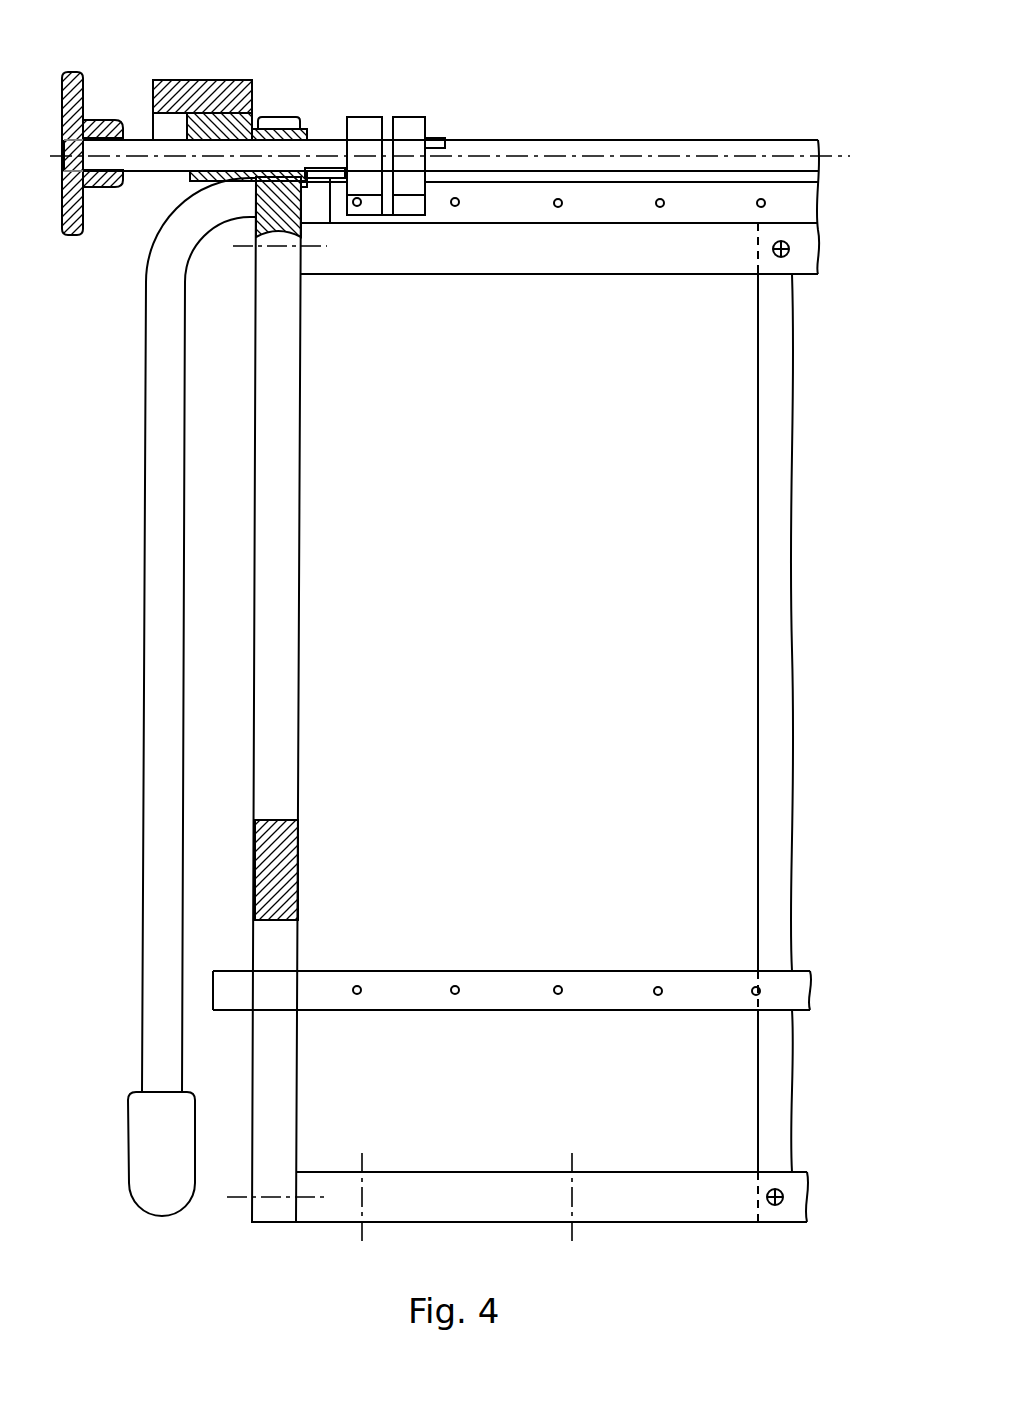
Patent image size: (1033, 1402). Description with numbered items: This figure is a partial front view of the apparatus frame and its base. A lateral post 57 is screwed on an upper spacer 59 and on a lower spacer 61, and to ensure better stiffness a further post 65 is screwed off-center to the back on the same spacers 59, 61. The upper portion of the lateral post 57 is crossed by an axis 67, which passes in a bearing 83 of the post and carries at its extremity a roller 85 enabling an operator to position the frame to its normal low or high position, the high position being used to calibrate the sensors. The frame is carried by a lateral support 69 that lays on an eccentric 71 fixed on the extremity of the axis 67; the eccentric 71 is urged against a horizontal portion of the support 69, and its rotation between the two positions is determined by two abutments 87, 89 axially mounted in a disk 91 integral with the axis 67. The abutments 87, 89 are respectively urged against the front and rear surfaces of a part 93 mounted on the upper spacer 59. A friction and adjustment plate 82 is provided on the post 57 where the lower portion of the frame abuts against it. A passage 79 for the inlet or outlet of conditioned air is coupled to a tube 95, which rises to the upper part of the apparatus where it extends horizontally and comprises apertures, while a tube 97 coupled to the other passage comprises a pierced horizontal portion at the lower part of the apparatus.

The lateral post 57 is at (283, 495).
The upper spacer 59 is at (605, 260).
The lower spacer 61 is at (465, 1185).
The post 65 is at (767, 512).
The axis 67 is at (635, 145).
The lateral support 69 is at (185, 88).
The eccentric 71 is at (252, 115).
The passage 79 is at (185, 1175).
The friction and adjustment plate 82 is at (287, 860).
The bearing 83 is at (307, 128).
The roller 85 is at (63, 72).
The abutment 87 is at (330, 175).
The abutment 89 is at (443, 142).
The disk 91 is at (413, 132).
The part 93 is at (387, 222).
The tube 95 is at (153, 633).
The tube 97 is at (513, 977).